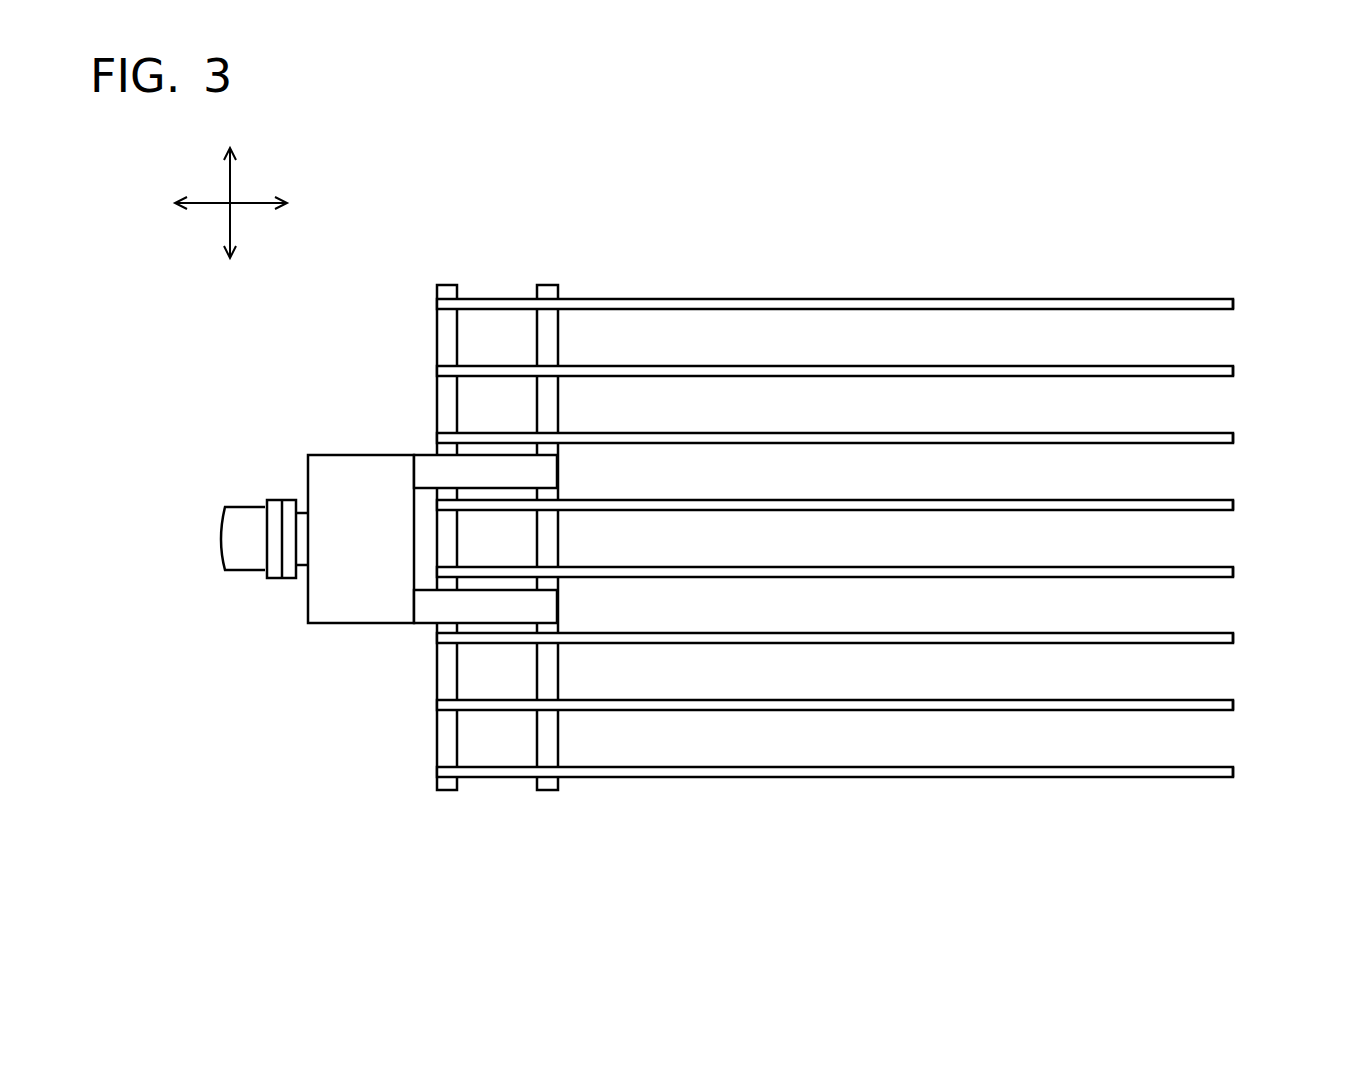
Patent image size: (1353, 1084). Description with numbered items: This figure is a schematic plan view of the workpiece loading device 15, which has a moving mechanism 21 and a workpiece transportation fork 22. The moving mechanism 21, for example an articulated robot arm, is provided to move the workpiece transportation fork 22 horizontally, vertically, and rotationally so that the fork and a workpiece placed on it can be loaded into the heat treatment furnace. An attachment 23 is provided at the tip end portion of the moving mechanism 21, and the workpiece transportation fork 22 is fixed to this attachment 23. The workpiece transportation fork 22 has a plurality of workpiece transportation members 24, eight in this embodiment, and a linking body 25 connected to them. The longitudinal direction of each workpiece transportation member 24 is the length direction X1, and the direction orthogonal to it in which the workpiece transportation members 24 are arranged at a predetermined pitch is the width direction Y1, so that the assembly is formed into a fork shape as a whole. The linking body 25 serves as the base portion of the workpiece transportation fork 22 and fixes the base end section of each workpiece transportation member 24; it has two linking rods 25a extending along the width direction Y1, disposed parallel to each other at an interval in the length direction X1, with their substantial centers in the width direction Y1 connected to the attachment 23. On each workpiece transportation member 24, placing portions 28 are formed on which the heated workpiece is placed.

The workpiece loading device 15 is at (1182, 212).
The moving mechanism 21 is at (245, 525).
The workpiece transportation fork 22 is at (835, 507).
The attachment 23 is at (428, 607).
The workpiece transportation member 24 is at (1235, 304).
The linking body 25 is at (497, 616).
The linking rod 25a is at (578, 865).
The placing portion 28 is at (707, 310).
The length direction X1 is at (207, 200).
The width direction Y1 is at (232, 178).